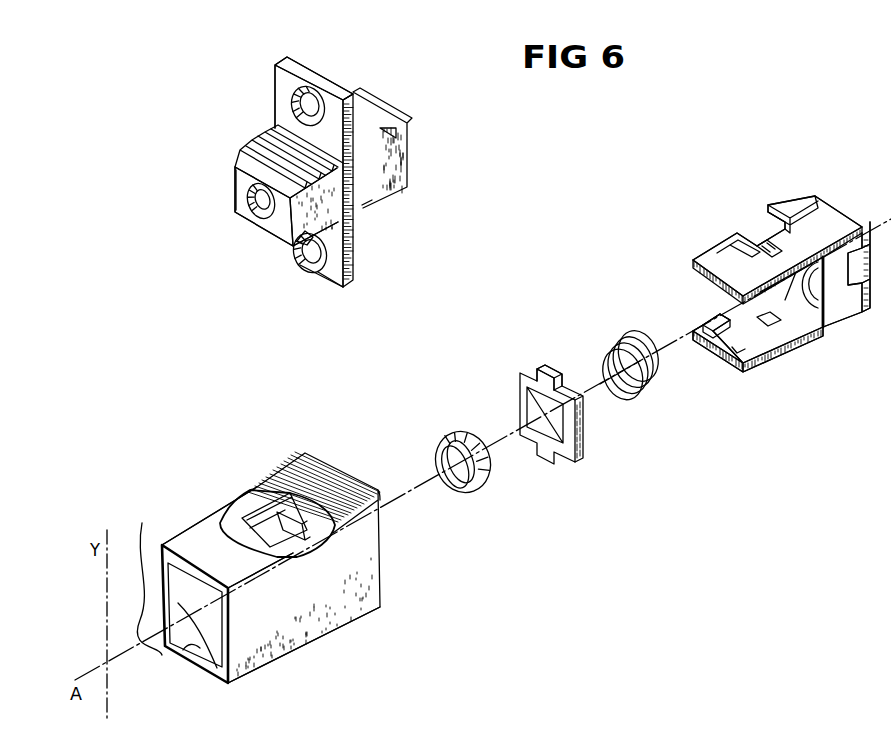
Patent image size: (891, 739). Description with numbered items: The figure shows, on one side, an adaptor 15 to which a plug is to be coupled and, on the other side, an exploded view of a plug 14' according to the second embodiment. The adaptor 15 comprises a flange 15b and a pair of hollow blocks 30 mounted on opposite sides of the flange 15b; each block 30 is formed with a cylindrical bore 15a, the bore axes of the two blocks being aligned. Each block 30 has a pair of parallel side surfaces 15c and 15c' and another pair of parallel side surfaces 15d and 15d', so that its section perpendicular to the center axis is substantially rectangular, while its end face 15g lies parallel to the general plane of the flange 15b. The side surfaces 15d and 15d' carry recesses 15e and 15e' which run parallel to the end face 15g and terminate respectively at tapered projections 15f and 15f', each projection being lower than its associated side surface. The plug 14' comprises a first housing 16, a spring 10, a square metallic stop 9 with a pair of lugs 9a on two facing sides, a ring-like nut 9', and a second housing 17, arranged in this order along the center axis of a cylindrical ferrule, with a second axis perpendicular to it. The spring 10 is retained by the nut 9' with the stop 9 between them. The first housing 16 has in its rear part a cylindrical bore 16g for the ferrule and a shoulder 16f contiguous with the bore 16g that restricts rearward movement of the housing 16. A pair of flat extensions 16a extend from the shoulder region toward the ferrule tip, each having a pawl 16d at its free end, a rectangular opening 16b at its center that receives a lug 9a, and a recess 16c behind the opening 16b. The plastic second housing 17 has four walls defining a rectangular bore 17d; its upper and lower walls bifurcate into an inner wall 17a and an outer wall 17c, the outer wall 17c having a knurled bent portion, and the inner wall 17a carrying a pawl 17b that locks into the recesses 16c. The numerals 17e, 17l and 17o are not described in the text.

The stop 9 is at (520, 406).
The lug 9a is at (548, 368).
The nut 9' is at (448, 455).
The spring 10 is at (610, 345).
The plug 14' is at (616, 296).
The adaptor 15 is at (408, 236).
The cylindrical bore 15a is at (260, 215).
The flange 15b is at (330, 87).
The side surface 15c is at (392, 188).
The side surface 15c' is at (246, 151).
The side surface 15d is at (265, 129).
The side surface 15d' is at (364, 251).
The recess 15e is at (233, 166).
The recess 15e' is at (327, 276).
The tapered projection 15f is at (216, 193).
The tapered projection 15f' is at (304, 275).
The end face 15g is at (247, 217).
The first housing 16 is at (838, 203).
The flat extension 16a is at (727, 328).
The rectangular opening 16b is at (748, 246).
The recess 16c is at (760, 230).
The pawl 16d is at (722, 350).
The shoulder 16f is at (800, 302).
The cylindrical bore 16g is at (828, 282).
The second housing 17 is at (203, 480).
The inner wall 17a is at (272, 530).
The pawl 17b is at (305, 555).
The outer wall 17c is at (300, 470).
The bore 17d is at (187, 648).
The projection 17e is at (302, 530).
The side wall 17l is at (245, 612).
The top wall 17o is at (188, 543).
The hollow block 30 is at (404, 118).